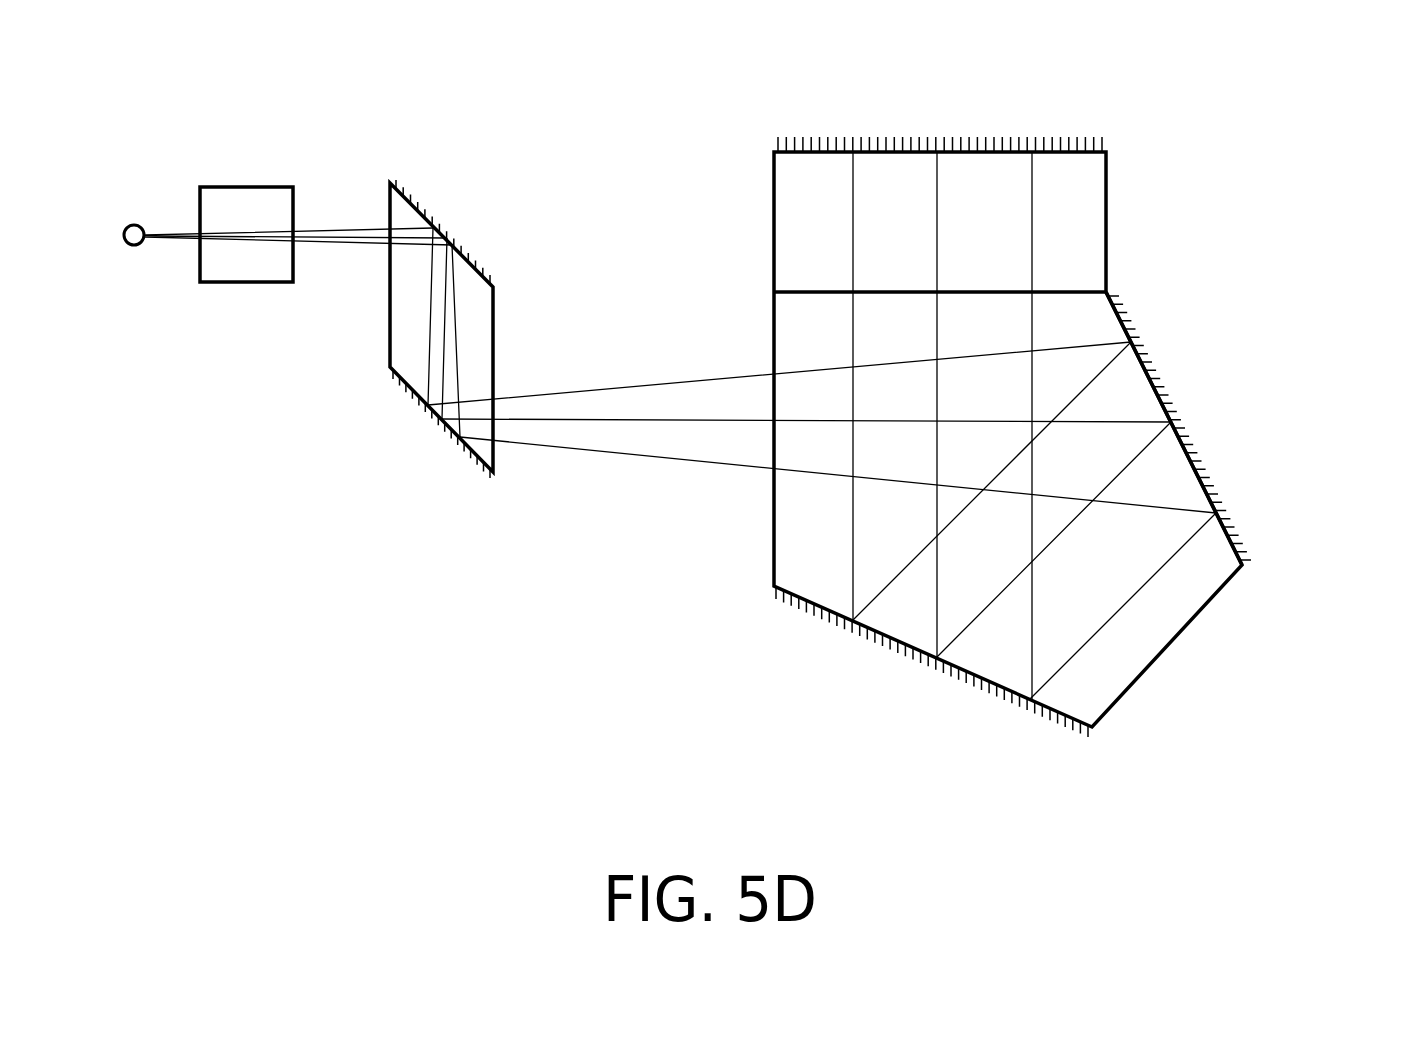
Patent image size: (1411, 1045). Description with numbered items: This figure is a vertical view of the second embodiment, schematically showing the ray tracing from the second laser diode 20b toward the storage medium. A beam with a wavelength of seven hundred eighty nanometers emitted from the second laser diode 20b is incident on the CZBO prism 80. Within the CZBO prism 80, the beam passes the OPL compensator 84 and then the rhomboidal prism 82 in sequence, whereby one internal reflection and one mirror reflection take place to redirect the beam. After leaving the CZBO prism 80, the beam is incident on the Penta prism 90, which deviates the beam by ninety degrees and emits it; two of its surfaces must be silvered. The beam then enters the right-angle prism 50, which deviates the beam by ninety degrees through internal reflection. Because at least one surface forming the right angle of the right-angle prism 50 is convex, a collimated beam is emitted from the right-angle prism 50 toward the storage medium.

The second laser diode 20b is at (134, 246).
The CZBO prism 80 is at (333, 167).
The OPL compensator 84 is at (233, 203).
The rhomboidal prism 82 is at (412, 200).
The right-angle prism 50 is at (768, 208).
The Penta prism 90 is at (1218, 483).